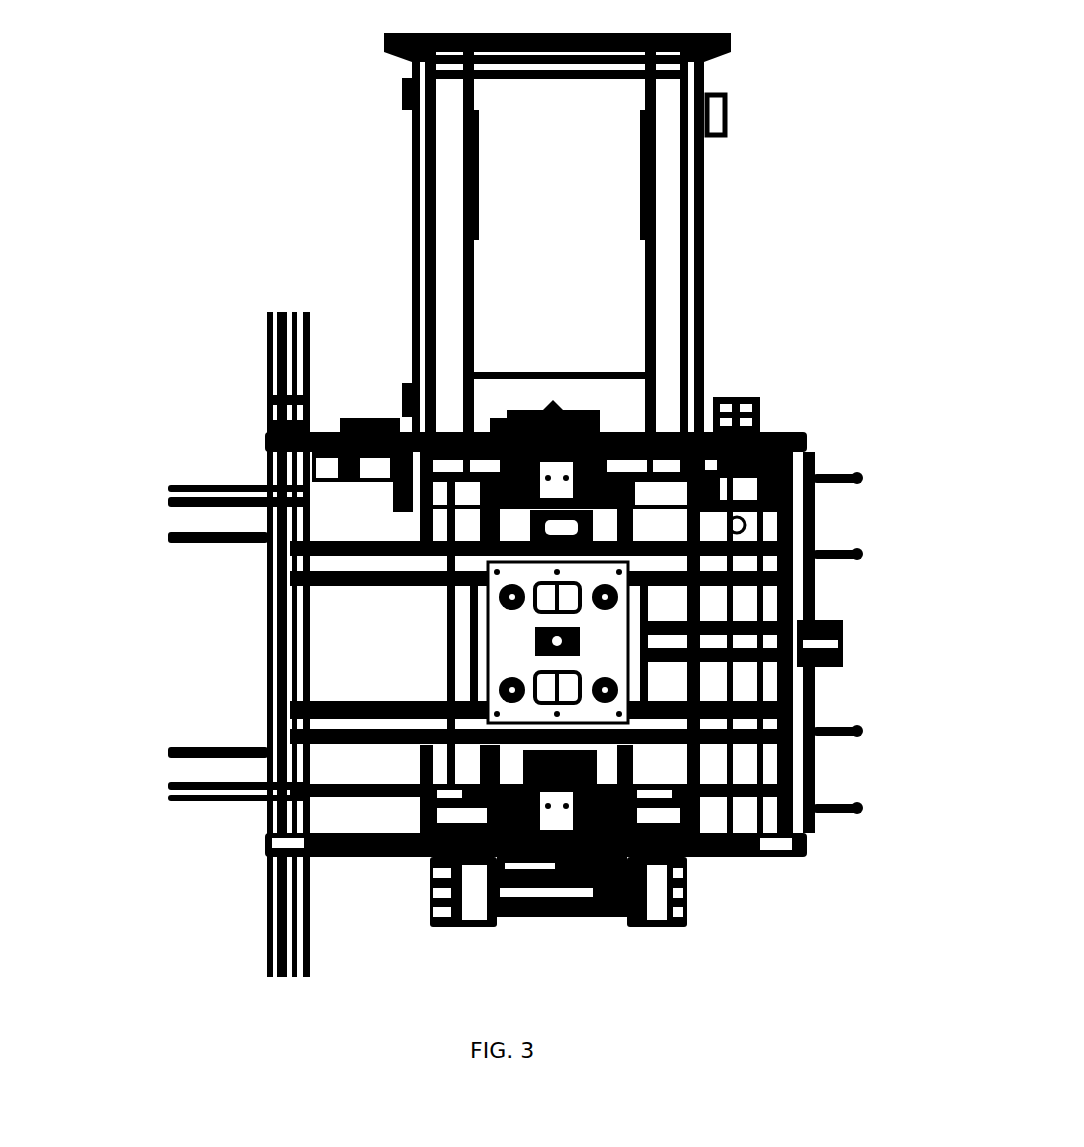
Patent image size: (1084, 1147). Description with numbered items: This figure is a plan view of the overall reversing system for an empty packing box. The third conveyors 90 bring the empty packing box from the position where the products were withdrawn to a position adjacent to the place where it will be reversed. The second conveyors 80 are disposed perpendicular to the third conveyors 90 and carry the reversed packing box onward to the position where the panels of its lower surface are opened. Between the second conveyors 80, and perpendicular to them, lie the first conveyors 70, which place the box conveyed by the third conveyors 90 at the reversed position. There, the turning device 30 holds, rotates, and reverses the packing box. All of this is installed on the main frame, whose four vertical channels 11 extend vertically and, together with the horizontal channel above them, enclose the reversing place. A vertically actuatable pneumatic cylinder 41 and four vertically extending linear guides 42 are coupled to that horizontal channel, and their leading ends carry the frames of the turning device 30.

The third conveyors 90 is at (500, 272).
The turning device 30 is at (773, 858).
The vertical channels 11 is at (740, 560).
The first conveyors 70 is at (460, 420).
The pneumatic cylinder 41 is at (586, 633).
The linear guides 42 is at (845, 655).
The second conveyors 80 is at (177, 568).